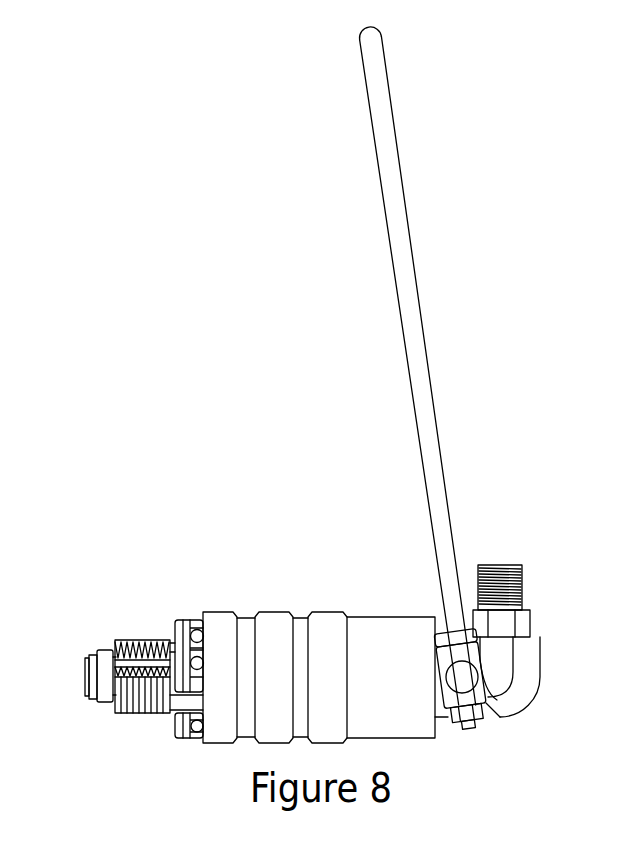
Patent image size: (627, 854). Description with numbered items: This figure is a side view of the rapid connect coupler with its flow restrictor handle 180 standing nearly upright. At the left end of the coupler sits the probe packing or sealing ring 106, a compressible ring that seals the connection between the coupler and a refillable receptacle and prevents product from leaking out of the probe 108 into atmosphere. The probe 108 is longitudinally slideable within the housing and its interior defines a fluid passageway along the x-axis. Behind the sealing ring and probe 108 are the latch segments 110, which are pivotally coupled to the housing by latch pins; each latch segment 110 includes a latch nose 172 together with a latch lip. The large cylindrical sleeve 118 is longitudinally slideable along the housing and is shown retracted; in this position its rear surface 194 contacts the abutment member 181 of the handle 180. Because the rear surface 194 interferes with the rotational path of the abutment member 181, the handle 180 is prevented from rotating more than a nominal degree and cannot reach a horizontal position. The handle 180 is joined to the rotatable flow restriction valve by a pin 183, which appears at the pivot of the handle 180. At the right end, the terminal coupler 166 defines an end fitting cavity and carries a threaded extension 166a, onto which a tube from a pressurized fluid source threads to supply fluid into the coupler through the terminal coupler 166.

The probe packing or sealing ring 106 is at (92, 653).
The probe 108 is at (101, 650).
The latch nose 172 is at (142, 639).
The latch segment 110 is at (172, 638).
The sleeve 118 is at (328, 611).
The flow restrictor handle 180 is at (412, 253).
The abutment member 181 is at (442, 640).
The pin 183 is at (480, 688).
The rear surface 194 is at (438, 735).
The terminal coupler 166 is at (522, 604).
The threaded extension 166a is at (522, 574).